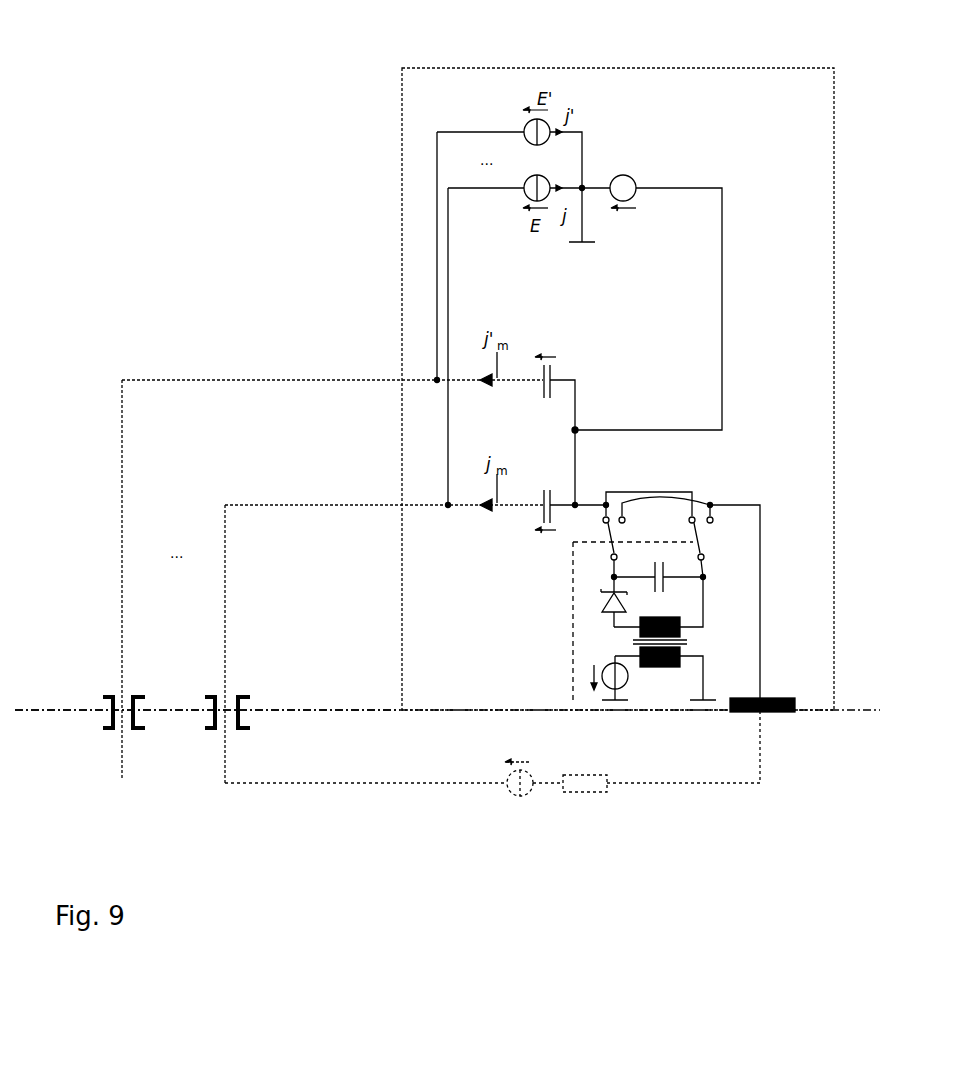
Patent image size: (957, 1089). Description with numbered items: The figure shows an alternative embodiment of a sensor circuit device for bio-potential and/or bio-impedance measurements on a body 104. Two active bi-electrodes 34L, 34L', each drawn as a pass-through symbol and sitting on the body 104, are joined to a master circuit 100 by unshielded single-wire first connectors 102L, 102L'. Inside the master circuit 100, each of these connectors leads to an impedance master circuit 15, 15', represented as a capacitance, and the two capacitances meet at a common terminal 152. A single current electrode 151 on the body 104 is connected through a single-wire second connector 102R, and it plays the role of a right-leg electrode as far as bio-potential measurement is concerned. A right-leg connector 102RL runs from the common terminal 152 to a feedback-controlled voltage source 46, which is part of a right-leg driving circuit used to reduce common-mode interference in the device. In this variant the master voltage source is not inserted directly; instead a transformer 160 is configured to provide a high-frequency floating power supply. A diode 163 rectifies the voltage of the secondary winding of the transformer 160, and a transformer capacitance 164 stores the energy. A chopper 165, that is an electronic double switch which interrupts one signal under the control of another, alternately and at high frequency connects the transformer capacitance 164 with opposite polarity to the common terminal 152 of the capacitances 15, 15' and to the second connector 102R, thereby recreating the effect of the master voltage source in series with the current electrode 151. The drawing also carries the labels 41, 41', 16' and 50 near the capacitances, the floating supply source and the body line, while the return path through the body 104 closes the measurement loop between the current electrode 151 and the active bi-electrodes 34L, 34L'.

The master circuit 100 is at (700, 67).
The feedback-controlled voltage source 46 is at (634, 178).
The right-leg connector 102RL is at (723, 258).
The single-wire first connector 102L' is at (332, 552).
The single-wire first connector 102L is at (384, 615).
The single-wire second connector 102R is at (749, 505).
The impedance master circuit 15' is at (580, 394).
The impedance master circuit 15 is at (513, 525).
The current 41' is at (553, 322).
The current 41 is at (513, 585).
The common terminal 152 is at (578, 428).
The chopper 165 is at (686, 472).
The transformer capacitance 164 is at (665, 565).
The transformer 160 is at (705, 633).
The diode 163 is at (606, 606).
The voltage source 16' is at (577, 648).
The current electrode 151 is at (770, 696).
The body 104 is at (657, 782).
The active bi-electrode 34L' is at (142, 680).
The active bi-electrode 34L is at (247, 680).
The ground line 50 is at (347, 708).